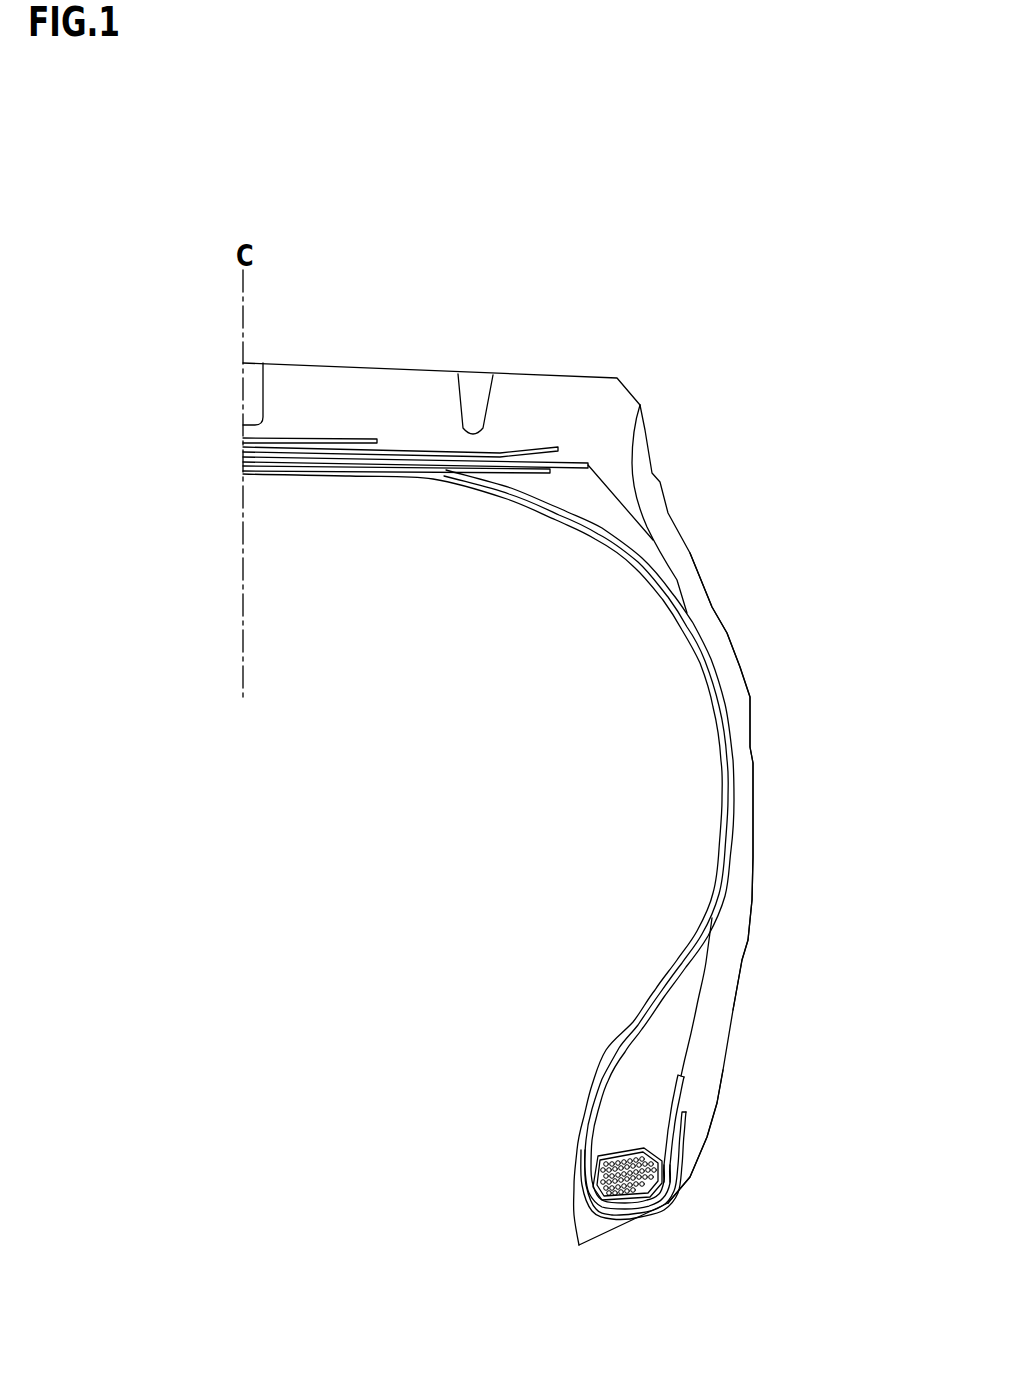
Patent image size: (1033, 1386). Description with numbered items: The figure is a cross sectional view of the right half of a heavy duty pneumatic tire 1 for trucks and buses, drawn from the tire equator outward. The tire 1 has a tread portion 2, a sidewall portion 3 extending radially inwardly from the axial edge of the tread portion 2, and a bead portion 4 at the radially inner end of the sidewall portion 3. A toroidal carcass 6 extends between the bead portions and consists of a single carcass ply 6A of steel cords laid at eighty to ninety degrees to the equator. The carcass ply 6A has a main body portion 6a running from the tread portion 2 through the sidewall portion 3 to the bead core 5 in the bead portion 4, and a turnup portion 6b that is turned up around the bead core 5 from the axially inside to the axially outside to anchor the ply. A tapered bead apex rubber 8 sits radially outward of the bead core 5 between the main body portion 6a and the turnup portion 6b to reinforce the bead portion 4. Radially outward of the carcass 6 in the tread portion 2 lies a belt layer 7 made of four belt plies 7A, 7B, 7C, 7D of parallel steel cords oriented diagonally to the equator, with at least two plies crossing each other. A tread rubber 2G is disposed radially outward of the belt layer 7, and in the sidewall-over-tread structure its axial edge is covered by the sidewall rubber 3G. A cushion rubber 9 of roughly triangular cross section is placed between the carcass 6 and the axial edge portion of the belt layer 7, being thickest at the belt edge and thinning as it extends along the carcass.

The heavy duty pneumatic tire 1 is at (669, 288).
The tread portion 2 is at (386, 345).
The tread rubber 2G is at (540, 400).
The sidewall portion 3 is at (777, 777).
The sidewall rubber 3G is at (720, 643).
The bead portion 4 is at (736, 1152).
The bead core 5 is at (615, 1175).
The carcass 6 is at (539, 839).
The carcass ply 6A is at (539, 839).
The main body portion 6a is at (685, 973).
The turnup portion 6b is at (673, 1085).
The belt layer 7 is at (346, 461).
The belt ply 7A is at (347, 497).
The belt ply 7B is at (243, 458).
The belt ply 7C is at (243, 449).
The belt ply 7D is at (243, 440).
The bead apex rubber 8 is at (643, 1107).
The cushion rubber 9 is at (597, 497).